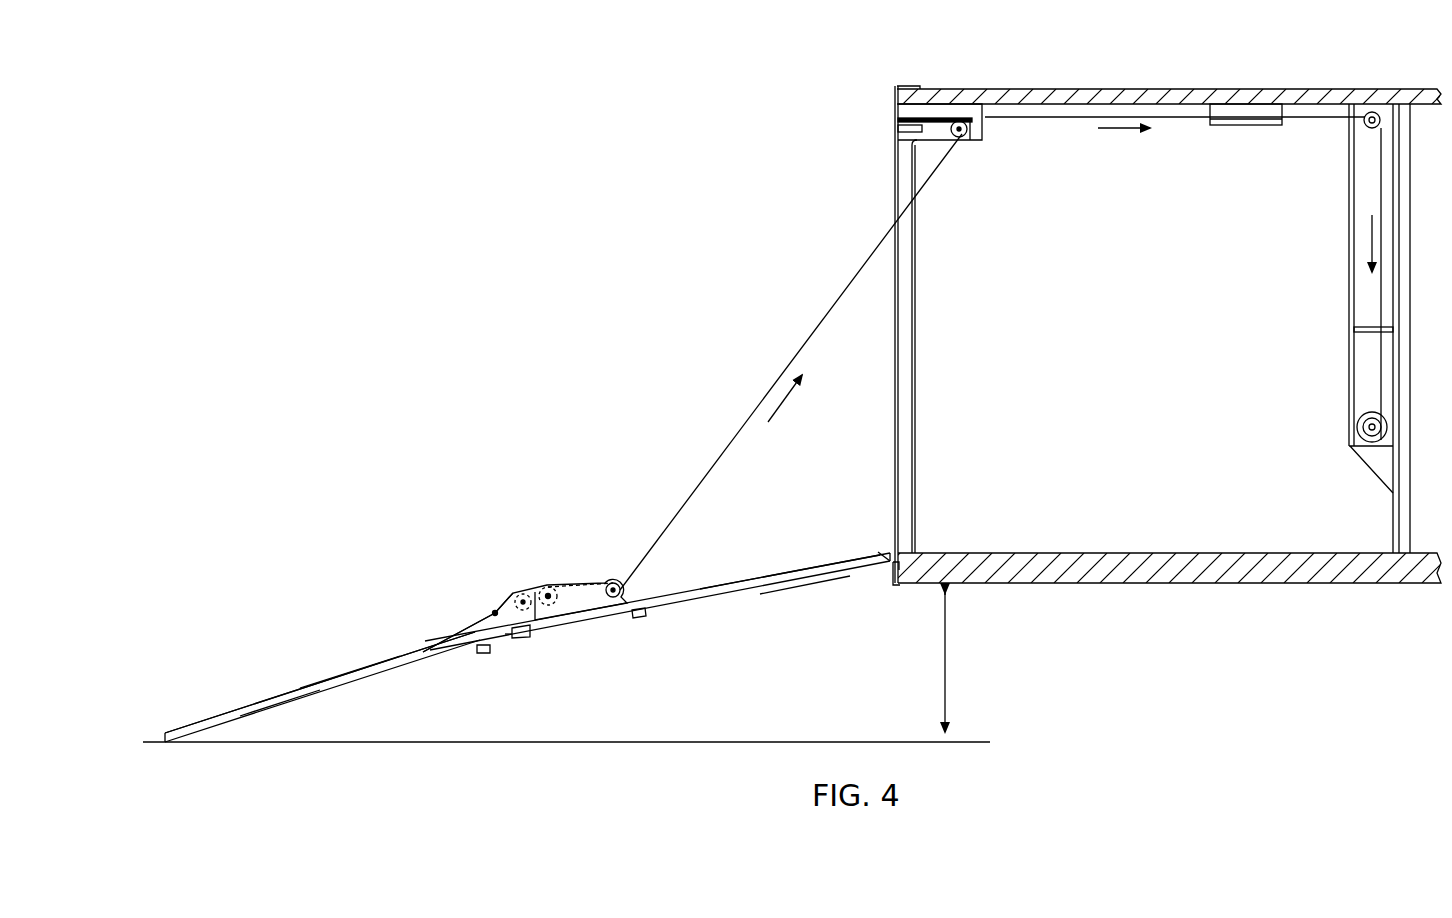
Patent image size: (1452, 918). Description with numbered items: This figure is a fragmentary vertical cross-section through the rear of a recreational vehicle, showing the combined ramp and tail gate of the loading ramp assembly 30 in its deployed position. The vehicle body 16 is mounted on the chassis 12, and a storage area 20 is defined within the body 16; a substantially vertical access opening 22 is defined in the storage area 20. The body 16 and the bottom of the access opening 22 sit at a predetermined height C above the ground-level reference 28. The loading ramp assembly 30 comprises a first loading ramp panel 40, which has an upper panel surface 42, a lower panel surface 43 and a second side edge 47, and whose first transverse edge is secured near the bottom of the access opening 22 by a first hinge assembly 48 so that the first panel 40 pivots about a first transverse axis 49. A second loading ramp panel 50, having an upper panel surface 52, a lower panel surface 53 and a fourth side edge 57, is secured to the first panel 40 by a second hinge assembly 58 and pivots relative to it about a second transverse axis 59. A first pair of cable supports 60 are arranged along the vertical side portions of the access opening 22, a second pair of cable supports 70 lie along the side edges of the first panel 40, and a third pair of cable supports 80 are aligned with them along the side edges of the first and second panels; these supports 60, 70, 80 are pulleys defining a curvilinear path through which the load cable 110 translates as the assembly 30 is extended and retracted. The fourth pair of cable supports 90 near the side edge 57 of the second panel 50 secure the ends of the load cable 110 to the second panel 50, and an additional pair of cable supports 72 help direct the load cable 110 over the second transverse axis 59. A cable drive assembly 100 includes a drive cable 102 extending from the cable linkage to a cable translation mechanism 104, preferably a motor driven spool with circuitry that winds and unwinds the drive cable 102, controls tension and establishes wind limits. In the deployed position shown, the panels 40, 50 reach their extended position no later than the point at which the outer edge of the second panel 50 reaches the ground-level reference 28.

The chassis 12 is at (1314, 583).
The vehicle body 16 is at (897, 90).
The storage area 20 is at (1225, 146).
The access opening 22 is at (760, 178).
The ground-level reference 28 is at (686, 742).
The loading ramp assembly 30 is at (447, 520).
The first loading ramp panel 40 is at (762, 620).
The upper panel surface 42 is at (762, 572).
The lower panel surface 43 is at (798, 584).
The second side edge 47 is at (827, 569).
The first hinge assembly 48 is at (886, 570).
The first transverse axis 49 is at (888, 558).
The second loading ramp panel 50 is at (285, 637).
The upper panel surface 52 is at (377, 667).
The lower panel surface 53 is at (398, 670).
The fourth side edge 57 is at (326, 686).
The second hinge assembly 58 is at (510, 646).
The second transverse axis 59 is at (524, 636).
The first pair of cable supports 60 is at (977, 138).
The second pair of cable supports 70 is at (598, 584).
The additional pair of cable supports 72 is at (548, 586).
The third pair of cable supports 80 is at (454, 630).
The fourth pair of cable supports 90 is at (510, 600).
The cable drive assembly 100 is at (1300, 416).
The drive cable 102 is at (1048, 122).
The cable translation mechanism 104 is at (1356, 432).
The load cable 110 is at (838, 303).
The predetermined height C is at (940, 657).